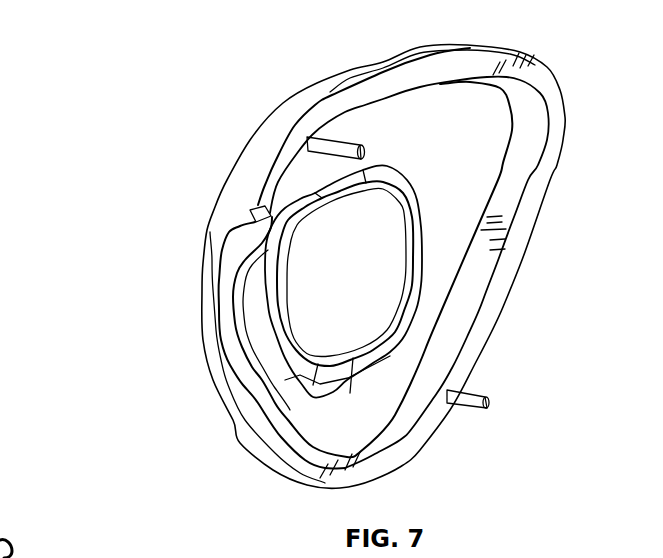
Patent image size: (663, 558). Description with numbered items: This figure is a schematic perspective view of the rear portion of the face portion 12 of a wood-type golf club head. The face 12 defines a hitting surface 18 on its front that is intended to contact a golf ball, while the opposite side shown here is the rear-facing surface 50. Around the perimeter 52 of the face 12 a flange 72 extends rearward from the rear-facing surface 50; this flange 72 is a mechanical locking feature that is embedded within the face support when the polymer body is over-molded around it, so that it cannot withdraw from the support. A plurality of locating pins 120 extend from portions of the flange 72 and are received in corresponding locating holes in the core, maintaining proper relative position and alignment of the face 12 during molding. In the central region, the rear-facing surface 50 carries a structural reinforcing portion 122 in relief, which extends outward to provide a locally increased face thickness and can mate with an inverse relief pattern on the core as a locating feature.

The face portion 12 is at (116, 63).
The hitting surface 18 is at (208, 226).
The perimeter 52 is at (465, 46).
The flange 72 is at (555, 137).
The rear-facing surface 50 is at (472, 147).
The locating pins 120 is at (338, 135).
The structural reinforcing portion 122 is at (385, 273).